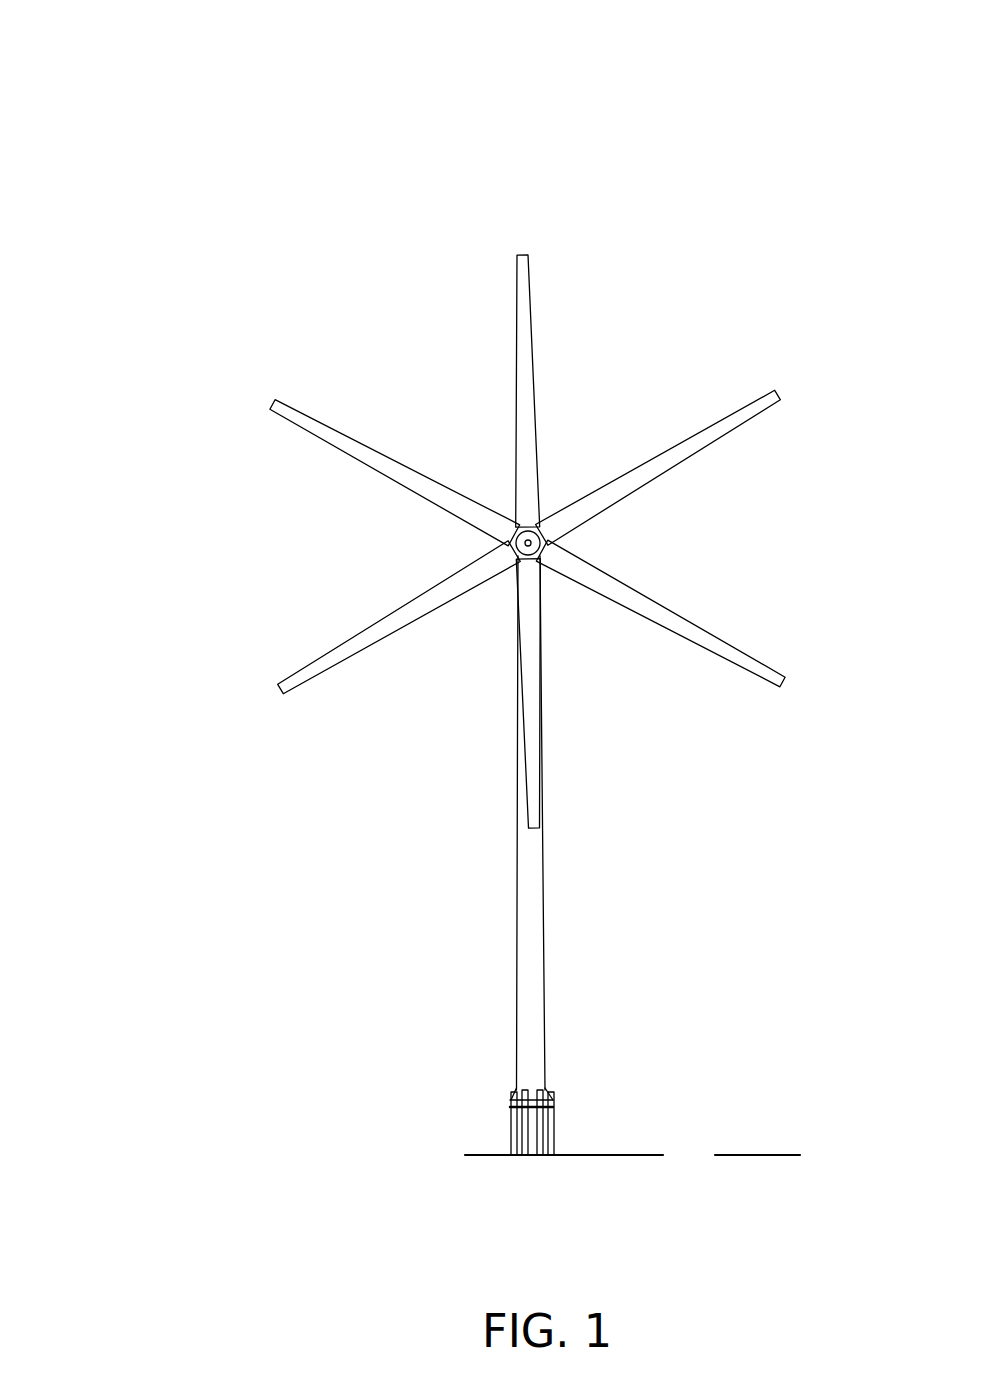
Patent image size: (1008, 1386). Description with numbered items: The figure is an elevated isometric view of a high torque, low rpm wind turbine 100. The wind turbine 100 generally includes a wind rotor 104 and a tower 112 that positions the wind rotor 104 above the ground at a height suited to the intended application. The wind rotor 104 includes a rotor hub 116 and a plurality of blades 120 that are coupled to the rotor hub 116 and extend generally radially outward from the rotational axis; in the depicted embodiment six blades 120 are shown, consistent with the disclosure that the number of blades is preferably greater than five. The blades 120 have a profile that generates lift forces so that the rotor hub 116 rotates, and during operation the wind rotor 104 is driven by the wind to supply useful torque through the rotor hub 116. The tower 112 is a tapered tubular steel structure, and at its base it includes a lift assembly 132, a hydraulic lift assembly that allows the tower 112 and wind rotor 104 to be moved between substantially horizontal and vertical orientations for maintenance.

The wind turbine 100 is at (352, 172).
The wind rotor 104 is at (220, 502).
The tower 112 is at (574, 996).
The rotor hub 116 is at (538, 530).
The blades 120 is at (740, 700).
The lift assembly 132 is at (590, 1118).